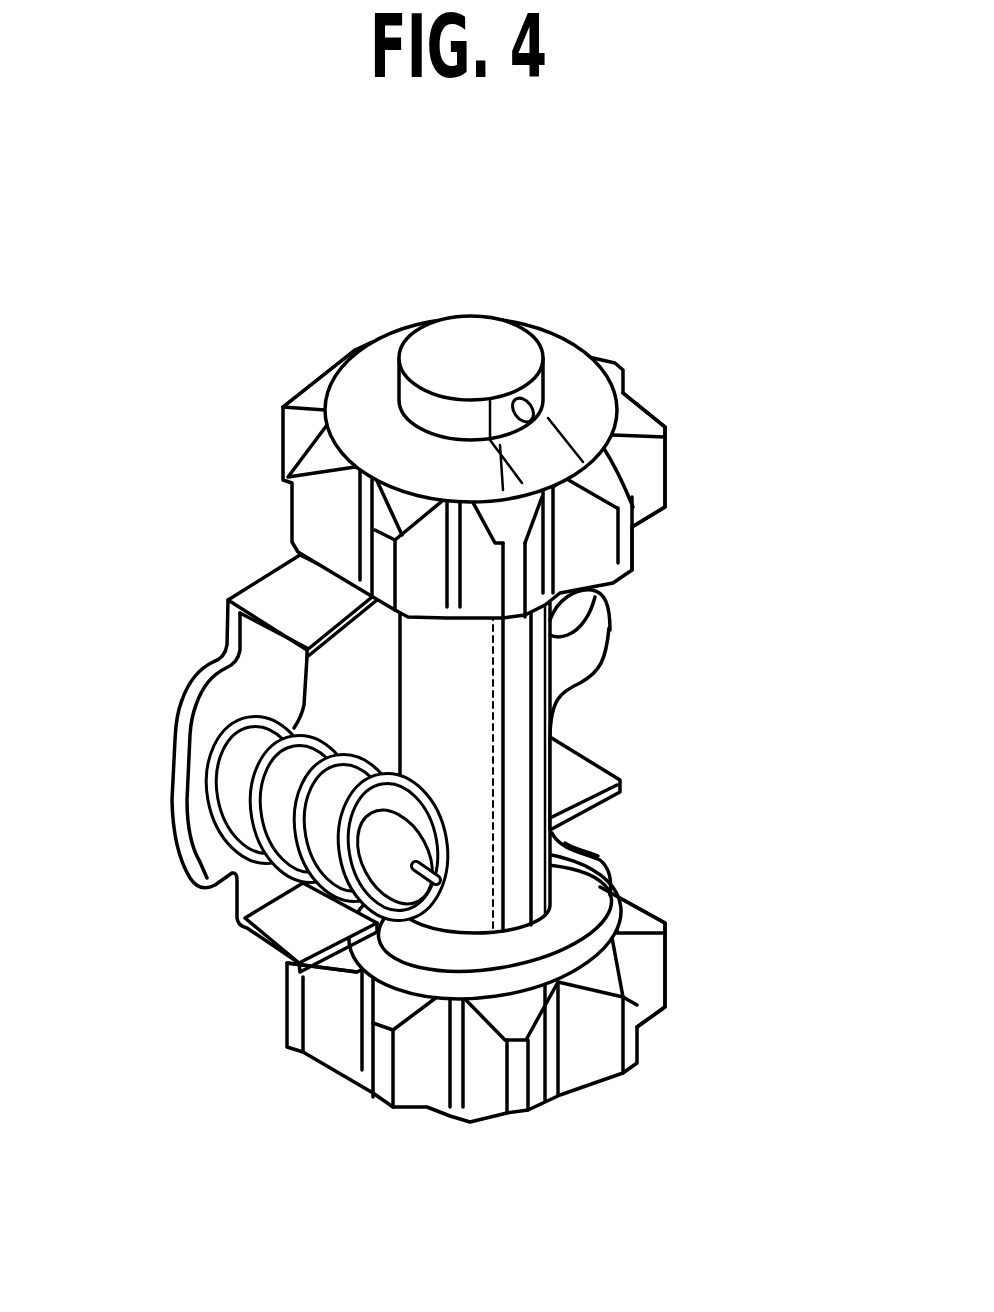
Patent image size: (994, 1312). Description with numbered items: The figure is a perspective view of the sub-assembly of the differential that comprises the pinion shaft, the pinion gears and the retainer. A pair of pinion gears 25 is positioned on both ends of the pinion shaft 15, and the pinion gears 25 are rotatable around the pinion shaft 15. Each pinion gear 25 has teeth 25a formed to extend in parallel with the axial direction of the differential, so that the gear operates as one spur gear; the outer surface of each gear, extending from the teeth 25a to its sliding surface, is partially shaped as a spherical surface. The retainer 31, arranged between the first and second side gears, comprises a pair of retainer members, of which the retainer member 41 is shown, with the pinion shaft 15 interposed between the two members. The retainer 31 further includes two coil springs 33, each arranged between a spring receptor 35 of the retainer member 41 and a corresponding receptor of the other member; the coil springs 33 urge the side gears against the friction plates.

The pinion shaft 15 is at (552, 720).
The pinion gear 25 is at (546, 340).
The teeth 25a is at (668, 457).
The retainer 31 is at (222, 1041).
The coil spring 33 is at (212, 794).
The spring receptor 35 is at (607, 617).
The retainer member 41 is at (215, 662).